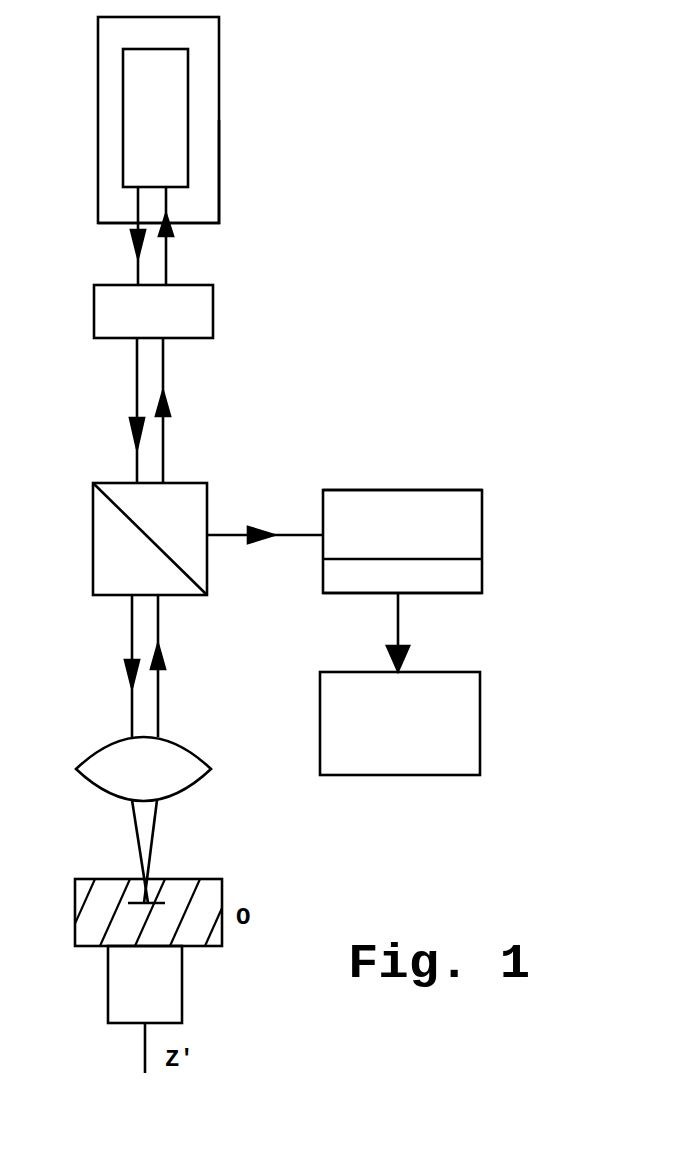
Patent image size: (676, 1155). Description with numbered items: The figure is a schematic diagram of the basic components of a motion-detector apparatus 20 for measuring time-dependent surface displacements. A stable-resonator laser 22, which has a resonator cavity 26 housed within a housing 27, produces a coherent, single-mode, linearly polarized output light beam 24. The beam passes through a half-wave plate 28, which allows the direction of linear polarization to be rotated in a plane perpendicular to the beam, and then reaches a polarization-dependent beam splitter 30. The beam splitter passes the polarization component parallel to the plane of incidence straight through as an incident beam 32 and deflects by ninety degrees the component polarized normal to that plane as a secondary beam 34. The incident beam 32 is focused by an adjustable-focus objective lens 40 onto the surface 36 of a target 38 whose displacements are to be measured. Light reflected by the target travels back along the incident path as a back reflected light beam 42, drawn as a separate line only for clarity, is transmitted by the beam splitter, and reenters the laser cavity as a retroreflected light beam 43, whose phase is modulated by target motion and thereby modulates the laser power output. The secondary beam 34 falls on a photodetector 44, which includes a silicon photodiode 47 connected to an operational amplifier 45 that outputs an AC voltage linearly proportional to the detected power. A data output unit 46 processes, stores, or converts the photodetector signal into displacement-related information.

The motion-detector apparatus 20 is at (207, 441).
The stable-resonator laser 22 is at (232, 52).
The output light beam 24 is at (138, 267).
The resonator cavity 26 is at (187, 135).
The housing 27 is at (217, 207).
The half-wave plate 28 is at (213, 310).
The polarization-dependent beam splitter 30 is at (220, 498).
The incident beam 32 is at (130, 717).
The secondary beam 34 is at (293, 538).
The surface 36 is at (108, 878).
The target 38 is at (95, 944).
The adjustable-focus objective lens 40 is at (202, 777).
The back reflected light beam 42 is at (160, 717).
The retroreflected light beam 43 is at (166, 205).
The photodetector 44 is at (397, 490).
The operational amplifier 45 is at (470, 575).
The data output unit 46 is at (480, 725).
The silicon photodiode 47 is at (457, 518).